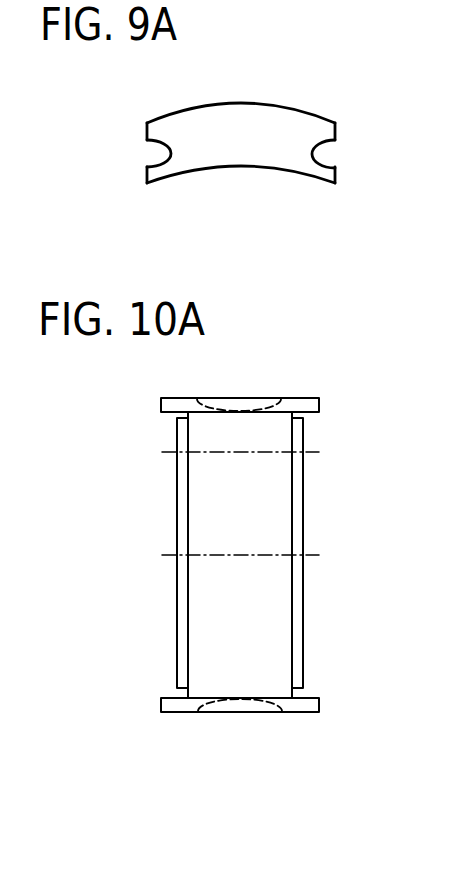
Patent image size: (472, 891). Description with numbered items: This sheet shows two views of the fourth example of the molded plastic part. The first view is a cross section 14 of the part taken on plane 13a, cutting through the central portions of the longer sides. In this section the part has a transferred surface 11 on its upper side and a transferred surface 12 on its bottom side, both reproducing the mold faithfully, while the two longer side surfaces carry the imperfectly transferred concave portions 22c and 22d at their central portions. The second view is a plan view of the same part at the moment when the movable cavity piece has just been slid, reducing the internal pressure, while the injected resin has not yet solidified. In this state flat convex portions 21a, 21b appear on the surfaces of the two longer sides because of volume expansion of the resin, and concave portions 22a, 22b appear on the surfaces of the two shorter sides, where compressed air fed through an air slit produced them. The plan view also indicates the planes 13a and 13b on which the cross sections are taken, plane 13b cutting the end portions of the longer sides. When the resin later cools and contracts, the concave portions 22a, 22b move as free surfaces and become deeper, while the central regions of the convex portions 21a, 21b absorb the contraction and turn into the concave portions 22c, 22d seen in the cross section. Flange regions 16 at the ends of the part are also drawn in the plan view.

In FIG. 9A, the transferred surface 11 is at (225, 103).
In FIG. 9A, the transferred surface 12 is at (227, 167).
In FIG. 9A, the cross section 14 is at (293, 117).
In FIG. 9A, the imperfectly transferred concave portion 22d is at (171, 153).
In FIG. 9A, the imperfectly transferred concave portion 22c is at (312, 154).
In FIG. 10A, the flange 16 is at (161, 405).
In FIG. 10A, the imperfectly transferred convex portion 21b is at (177, 434).
In FIG. 10A, the imperfectly transferred convex portion 21a is at (303, 432).
In FIG. 10A, the plane 13b is at (170, 457).
In FIG. 10A, the plane 13a is at (170, 560).
In FIG. 10A, the imperfectly transferred concave portion 22b is at (249, 409).
In FIG. 10A, the imperfectly transferred concave portion 22a is at (248, 703).